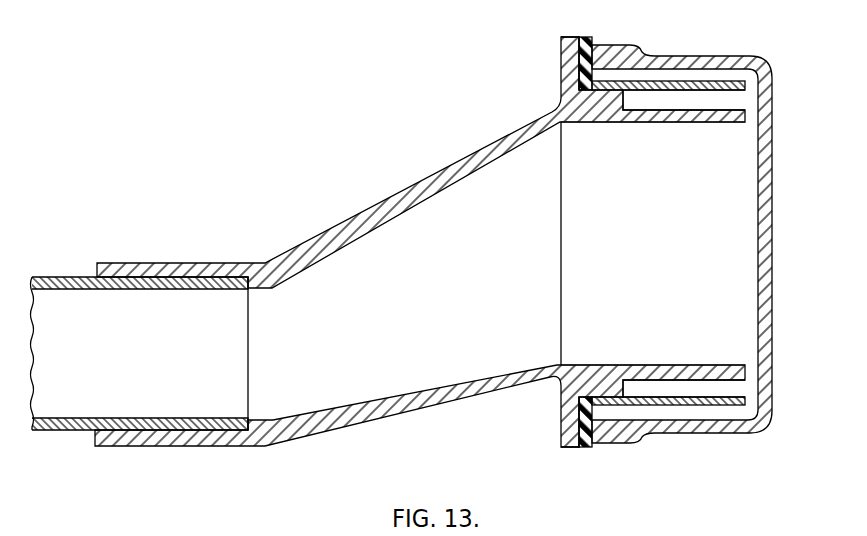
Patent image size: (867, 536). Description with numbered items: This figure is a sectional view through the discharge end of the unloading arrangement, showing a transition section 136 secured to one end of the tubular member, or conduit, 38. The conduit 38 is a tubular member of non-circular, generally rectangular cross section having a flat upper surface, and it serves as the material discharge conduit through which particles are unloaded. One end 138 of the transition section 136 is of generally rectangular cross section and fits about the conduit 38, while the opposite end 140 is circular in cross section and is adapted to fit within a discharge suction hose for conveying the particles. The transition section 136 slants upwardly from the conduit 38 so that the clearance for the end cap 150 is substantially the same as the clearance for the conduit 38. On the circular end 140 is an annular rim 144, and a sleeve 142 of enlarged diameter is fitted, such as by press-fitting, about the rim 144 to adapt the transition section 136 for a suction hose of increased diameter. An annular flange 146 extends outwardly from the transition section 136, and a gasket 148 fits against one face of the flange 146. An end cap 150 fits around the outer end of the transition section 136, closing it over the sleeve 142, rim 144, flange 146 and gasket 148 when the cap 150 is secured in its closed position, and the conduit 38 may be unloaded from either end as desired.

The tubular member 38 is at (72, 277).
The transition section 136 is at (357, 424).
The end of transition section 138 is at (152, 263).
The opposite end of transition section 140 is at (686, 123).
The sleeve 142 is at (685, 81).
The annular rim 144 is at (622, 100).
The annular flange 146 is at (558, 424).
The gasket 148 is at (584, 448).
The end cap 150 is at (765, 432).